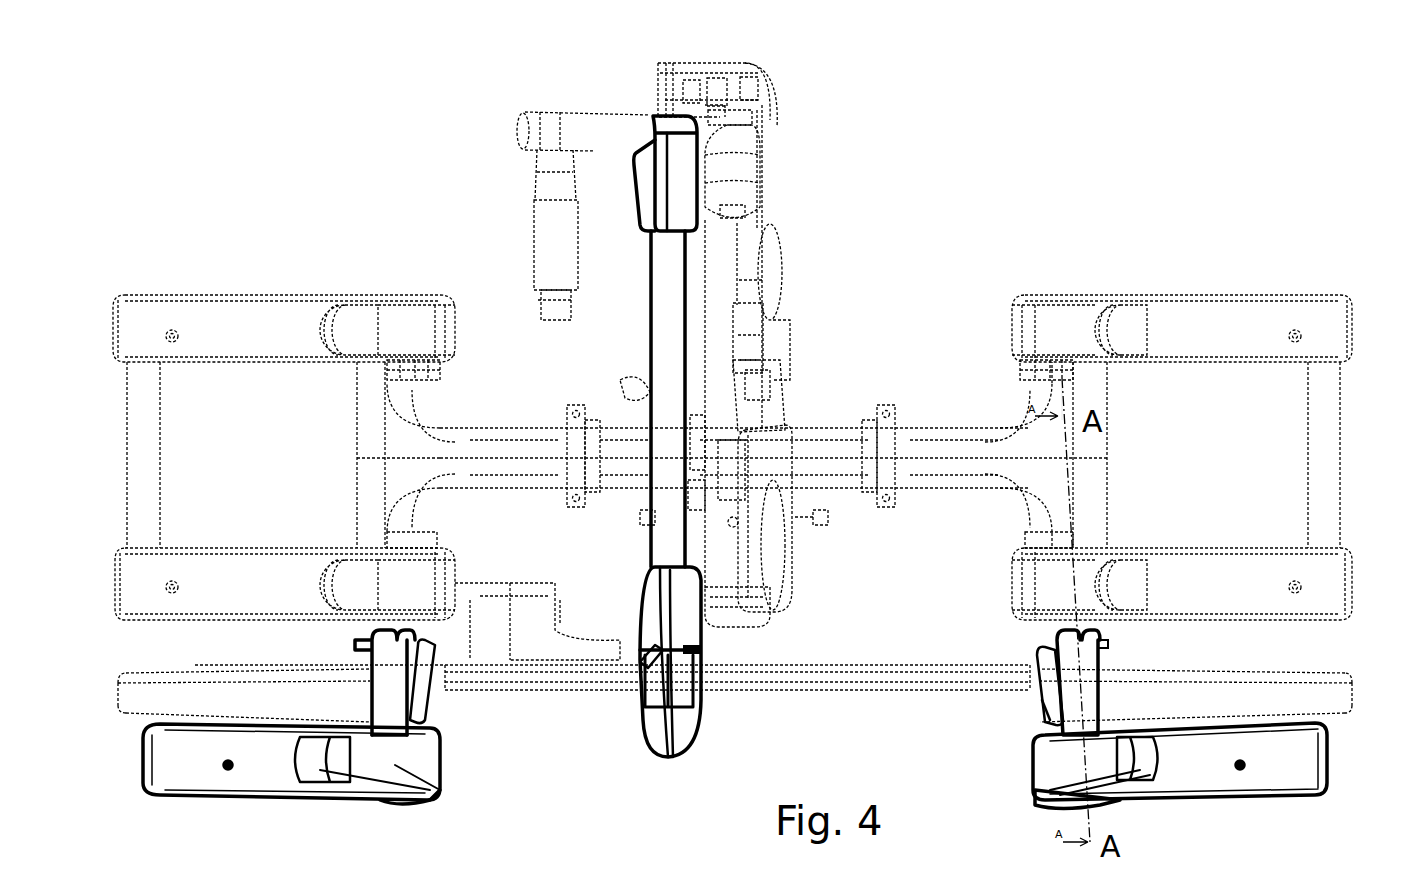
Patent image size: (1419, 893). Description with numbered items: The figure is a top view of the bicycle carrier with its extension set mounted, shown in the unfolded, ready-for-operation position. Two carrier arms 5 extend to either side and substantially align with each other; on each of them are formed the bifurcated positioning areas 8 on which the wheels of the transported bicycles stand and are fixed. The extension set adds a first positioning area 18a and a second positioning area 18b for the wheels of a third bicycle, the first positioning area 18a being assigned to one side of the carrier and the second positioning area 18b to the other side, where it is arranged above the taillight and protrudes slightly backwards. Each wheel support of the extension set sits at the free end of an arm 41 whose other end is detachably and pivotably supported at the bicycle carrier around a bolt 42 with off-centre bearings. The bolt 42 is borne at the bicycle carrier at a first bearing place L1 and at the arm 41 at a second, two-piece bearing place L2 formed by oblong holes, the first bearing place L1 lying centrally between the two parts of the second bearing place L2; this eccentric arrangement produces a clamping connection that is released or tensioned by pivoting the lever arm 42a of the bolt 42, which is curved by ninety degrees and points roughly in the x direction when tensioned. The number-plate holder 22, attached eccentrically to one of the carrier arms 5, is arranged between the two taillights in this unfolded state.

The carrier arm 5 is at (508, 442).
The positioning area 8 is at (258, 338).
The number-plate holder 22 is at (600, 677).
The first positioning area 18a is at (290, 767).
The second positioning area 18b is at (1270, 757).
The arm 41 is at (1077, 675).
The bolt 42 is at (1043, 645).
The lever arm 42a is at (1047, 715).
The first bearing place L1 is at (1080, 632).
The second bearing place L2 is at (1040, 615).